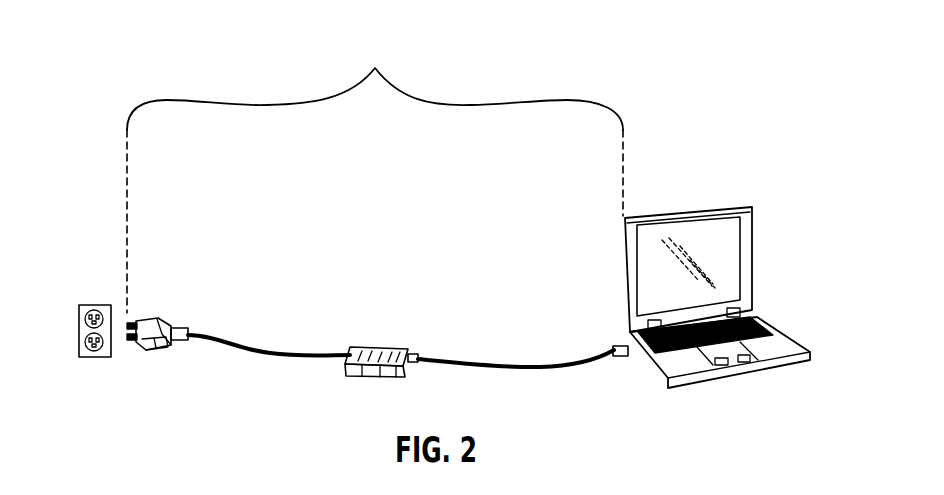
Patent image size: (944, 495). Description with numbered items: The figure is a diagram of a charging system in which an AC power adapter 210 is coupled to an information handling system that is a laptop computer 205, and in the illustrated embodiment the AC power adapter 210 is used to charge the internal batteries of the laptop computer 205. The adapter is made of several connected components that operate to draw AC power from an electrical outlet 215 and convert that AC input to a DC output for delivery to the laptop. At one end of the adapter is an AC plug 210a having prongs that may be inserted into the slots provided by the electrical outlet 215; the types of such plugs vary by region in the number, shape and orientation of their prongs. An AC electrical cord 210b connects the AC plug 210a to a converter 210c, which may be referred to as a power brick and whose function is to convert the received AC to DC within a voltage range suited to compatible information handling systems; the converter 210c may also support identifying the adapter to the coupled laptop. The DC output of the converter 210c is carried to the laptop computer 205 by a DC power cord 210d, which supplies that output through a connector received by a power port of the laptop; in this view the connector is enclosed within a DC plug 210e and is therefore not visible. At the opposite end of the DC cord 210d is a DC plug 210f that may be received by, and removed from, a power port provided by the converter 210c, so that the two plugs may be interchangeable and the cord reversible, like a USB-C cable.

The AC power adapter 210 is at (375, 200).
The AC plug 210a is at (133, 323).
The AC electrical cord 210b is at (197, 335).
The converter 210c is at (367, 352).
The DC power cord 210d is at (530, 368).
The DC plug 210e is at (633, 358).
The DC plug 210f is at (413, 350).
The laptop computer 205 is at (765, 318).
The electrical outlet 215 is at (93, 358).